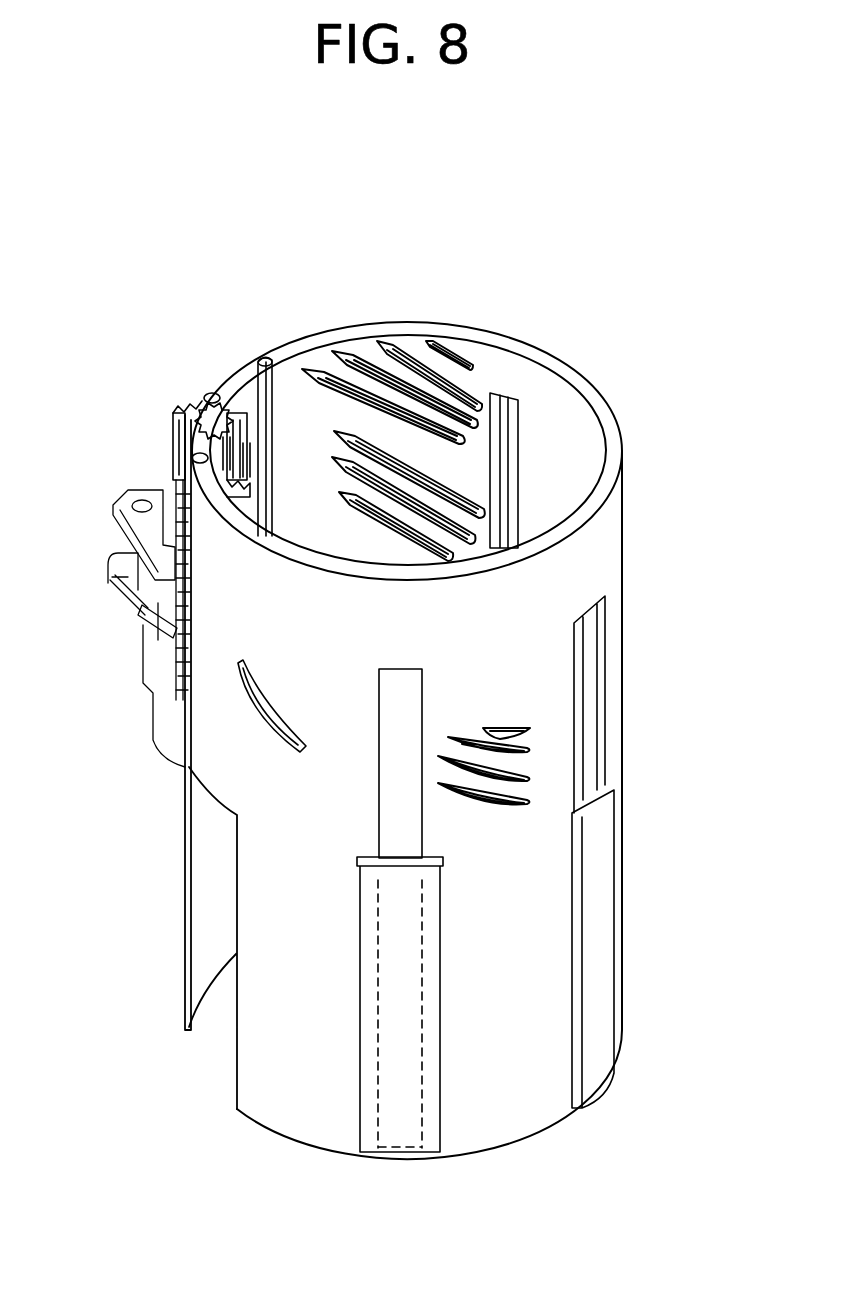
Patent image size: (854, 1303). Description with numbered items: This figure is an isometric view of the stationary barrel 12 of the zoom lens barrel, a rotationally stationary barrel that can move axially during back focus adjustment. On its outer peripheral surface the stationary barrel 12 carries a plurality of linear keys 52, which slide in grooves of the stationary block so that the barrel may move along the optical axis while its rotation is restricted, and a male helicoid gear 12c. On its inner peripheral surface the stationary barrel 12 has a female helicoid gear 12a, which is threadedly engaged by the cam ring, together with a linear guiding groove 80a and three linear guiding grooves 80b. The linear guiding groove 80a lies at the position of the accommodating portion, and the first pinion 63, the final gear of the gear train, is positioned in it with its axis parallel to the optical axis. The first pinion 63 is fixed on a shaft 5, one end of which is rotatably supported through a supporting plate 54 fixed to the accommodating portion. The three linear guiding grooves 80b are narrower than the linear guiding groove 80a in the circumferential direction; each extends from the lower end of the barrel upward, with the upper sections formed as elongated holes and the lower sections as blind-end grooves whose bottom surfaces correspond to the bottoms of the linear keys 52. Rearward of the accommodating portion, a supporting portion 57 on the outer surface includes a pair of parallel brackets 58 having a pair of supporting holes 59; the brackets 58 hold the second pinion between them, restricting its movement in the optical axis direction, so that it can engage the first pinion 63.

The stationary barrel 12 is at (646, 338).
The female helicoid gear 12a is at (380, 347).
The male helicoid gear 12c is at (505, 728).
The linear guiding groove 80a is at (250, 388).
The linear guiding grooves 80b is at (508, 413).
The linear keys 52 is at (603, 956).
The first pinion 63 is at (260, 362).
The shaft 5 is at (206, 394).
The supporting plate 54 is at (178, 413).
The supporting holes 59 is at (125, 492).
The brackets 58 is at (110, 583).
The supporting portion 57 is at (143, 627).